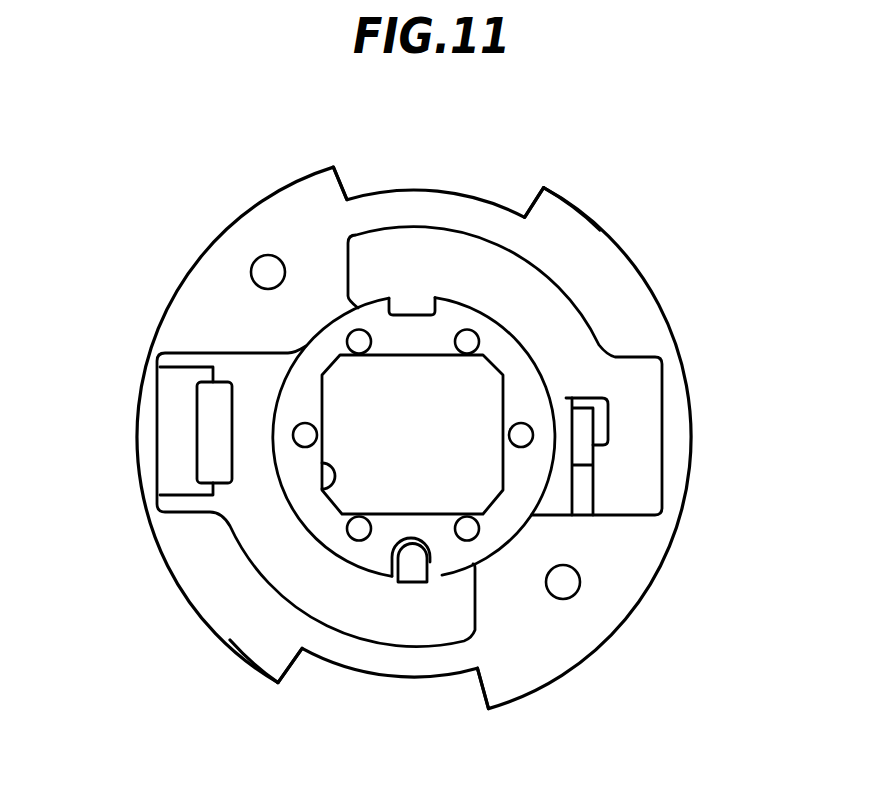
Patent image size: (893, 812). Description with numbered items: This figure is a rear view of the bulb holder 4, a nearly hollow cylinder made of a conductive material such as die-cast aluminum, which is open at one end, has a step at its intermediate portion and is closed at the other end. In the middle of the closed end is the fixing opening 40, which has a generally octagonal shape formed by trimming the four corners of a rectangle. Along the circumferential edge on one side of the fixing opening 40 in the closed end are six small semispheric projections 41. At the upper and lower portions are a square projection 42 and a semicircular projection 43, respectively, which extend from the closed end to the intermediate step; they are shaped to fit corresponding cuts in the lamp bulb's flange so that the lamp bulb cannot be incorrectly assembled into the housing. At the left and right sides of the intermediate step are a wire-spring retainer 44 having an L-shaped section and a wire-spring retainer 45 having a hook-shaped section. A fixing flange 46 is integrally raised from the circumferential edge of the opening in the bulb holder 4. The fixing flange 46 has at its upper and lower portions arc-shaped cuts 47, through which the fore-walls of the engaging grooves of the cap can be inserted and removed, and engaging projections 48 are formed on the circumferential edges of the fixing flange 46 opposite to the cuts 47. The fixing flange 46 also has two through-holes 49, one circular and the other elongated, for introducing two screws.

The bulb holder 4 is at (272, 190).
The fixing opening 40 is at (327, 483).
The small semispheric projections 41 is at (478, 336).
The square projection 42 is at (398, 308).
The semicircular projection 43 is at (430, 560).
The wire-spring retainer 44 is at (197, 440).
The wire-spring retainer 45 is at (588, 423).
The fixing flange 46 is at (166, 300).
The arc-shaped cuts 47 is at (521, 206).
The engaging projections 48 is at (553, 224).
The through-holes 49 is at (260, 273).